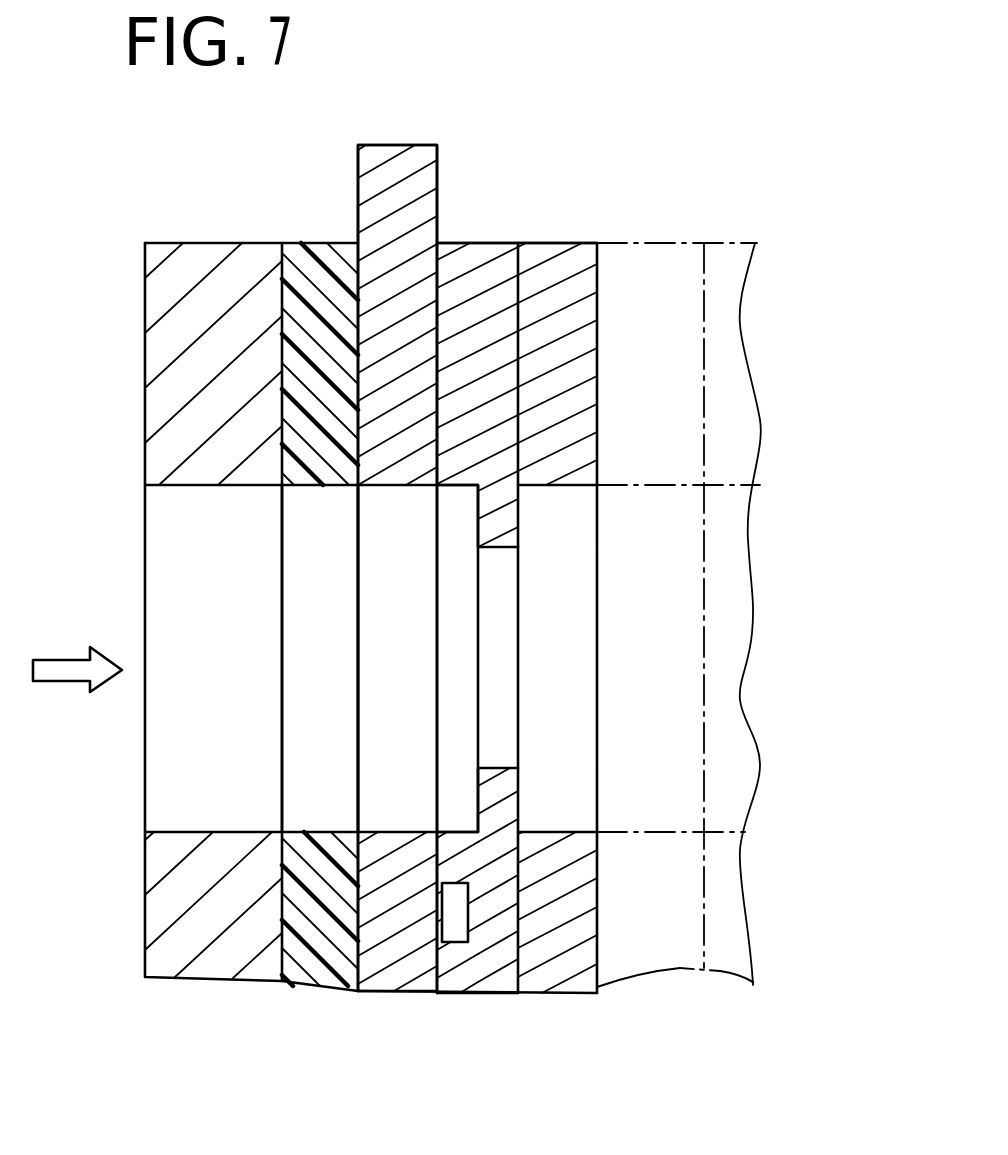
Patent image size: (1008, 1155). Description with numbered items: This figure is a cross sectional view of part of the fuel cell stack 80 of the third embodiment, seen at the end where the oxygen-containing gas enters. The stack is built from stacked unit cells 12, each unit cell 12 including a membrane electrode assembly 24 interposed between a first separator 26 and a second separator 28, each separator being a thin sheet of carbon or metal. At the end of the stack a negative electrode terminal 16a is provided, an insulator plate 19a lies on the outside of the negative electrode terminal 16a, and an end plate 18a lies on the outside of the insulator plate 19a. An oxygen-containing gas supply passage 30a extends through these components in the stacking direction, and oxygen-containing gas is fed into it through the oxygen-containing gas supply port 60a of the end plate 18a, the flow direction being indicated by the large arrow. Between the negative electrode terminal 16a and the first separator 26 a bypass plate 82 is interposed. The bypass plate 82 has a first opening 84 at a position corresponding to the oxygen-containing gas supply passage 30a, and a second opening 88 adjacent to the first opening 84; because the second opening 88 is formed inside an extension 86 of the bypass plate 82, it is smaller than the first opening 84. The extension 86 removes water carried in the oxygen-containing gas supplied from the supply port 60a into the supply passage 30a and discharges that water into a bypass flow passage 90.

The unit cell 12 is at (764, 182).
The negative electrode terminal 16a is at (396, 180).
The end plate 18a is at (205, 273).
The insulator plate 19a is at (322, 280).
The membrane electrode assembly 24 is at (651, 975).
The first separator 26 is at (562, 1003).
The second separator 28 is at (755, 985).
The oxygen-containing gas supply passage 30a is at (643, 633).
The oxygen-containing gas supply port 60a is at (178, 563).
The fuel cell stack 80 is at (750, 121).
The bypass plate 82 is at (504, 230).
The first opening 84 is at (460, 800).
The extension 86 is at (520, 800).
The second opening 88 is at (502, 703).
The bypass flow passage 90 is at (452, 925).